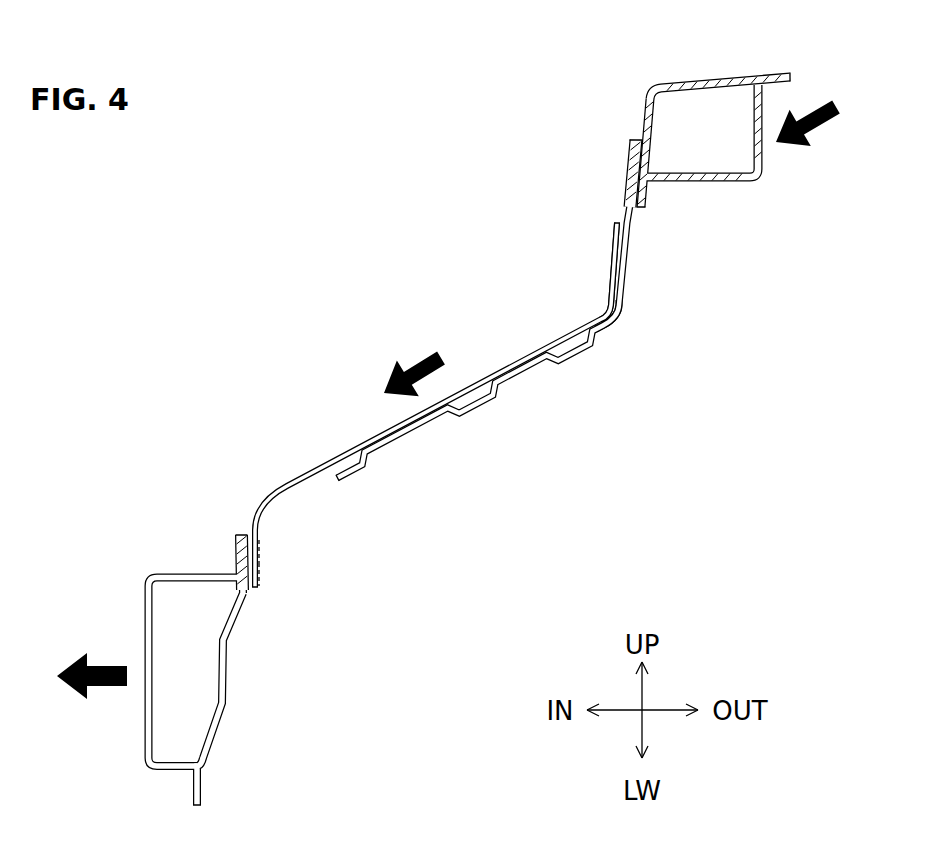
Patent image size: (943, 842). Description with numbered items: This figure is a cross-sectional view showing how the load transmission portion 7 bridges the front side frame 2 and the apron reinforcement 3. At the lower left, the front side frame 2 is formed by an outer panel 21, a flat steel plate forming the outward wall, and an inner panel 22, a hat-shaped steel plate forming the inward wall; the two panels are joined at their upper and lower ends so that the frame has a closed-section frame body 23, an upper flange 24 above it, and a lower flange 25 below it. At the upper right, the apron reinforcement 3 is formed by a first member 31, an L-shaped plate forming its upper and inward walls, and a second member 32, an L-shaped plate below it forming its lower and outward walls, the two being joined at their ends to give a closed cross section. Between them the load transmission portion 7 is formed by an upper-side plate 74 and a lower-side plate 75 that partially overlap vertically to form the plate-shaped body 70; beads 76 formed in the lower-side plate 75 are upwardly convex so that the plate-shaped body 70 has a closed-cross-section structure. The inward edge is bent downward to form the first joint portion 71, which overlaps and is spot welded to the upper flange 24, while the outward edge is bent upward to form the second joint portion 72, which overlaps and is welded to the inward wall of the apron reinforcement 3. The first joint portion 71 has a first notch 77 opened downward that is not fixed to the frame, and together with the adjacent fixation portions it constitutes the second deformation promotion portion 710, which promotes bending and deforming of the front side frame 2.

The front side frame 2 is at (185, 672).
The apron reinforcement 3 is at (685, 128).
The load transmission portion 7 is at (450, 406).
The outer panel 21 is at (228, 690).
The inner panel 22 is at (144, 735).
The frame body 23 is at (144, 600).
The upper flange 24 is at (233, 552).
The lower flange 25 is at (187, 795).
The first member 31 is at (645, 88).
The second member 32 is at (743, 182).
The plate-shaped body 70 is at (502, 370).
The first joint portion 71 is at (262, 573).
The second joint portion 72 is at (629, 150).
The upper-side plate 74 is at (598, 318).
The lower-side plate 75 is at (612, 335).
The beads 76 is at (572, 352).
The first notch 77 is at (262, 543).
The second deformation promotion portion 710 is at (288, 598).